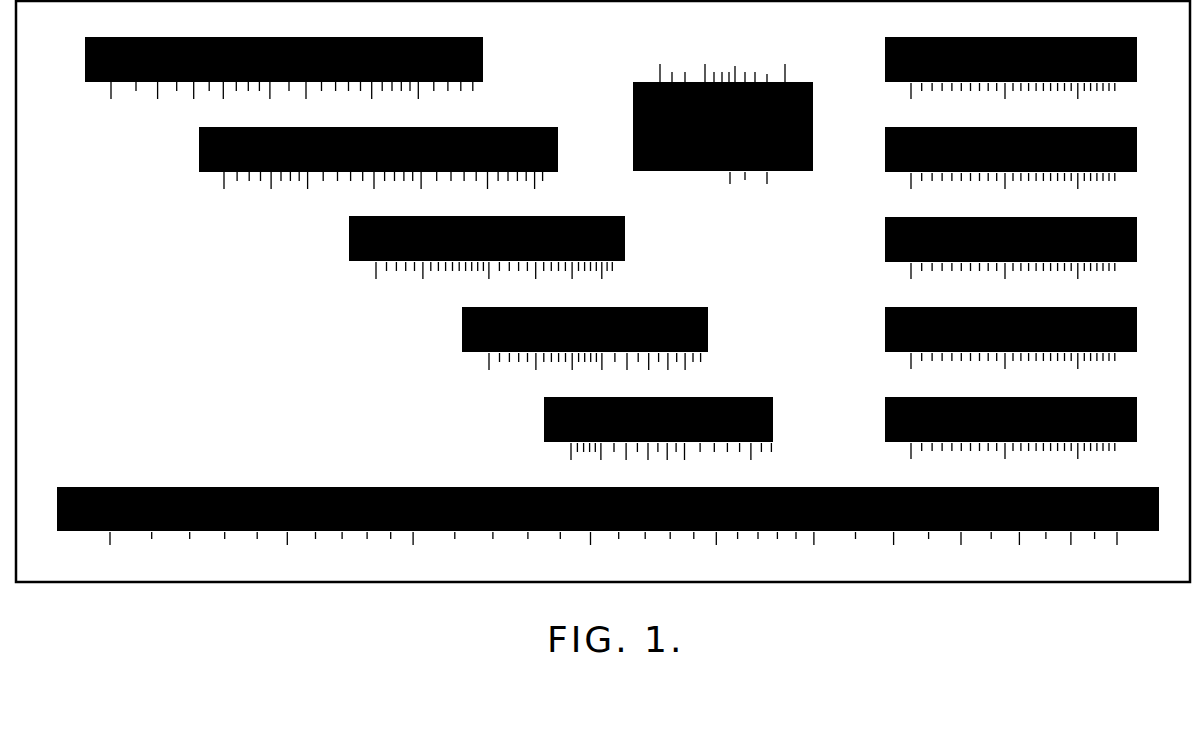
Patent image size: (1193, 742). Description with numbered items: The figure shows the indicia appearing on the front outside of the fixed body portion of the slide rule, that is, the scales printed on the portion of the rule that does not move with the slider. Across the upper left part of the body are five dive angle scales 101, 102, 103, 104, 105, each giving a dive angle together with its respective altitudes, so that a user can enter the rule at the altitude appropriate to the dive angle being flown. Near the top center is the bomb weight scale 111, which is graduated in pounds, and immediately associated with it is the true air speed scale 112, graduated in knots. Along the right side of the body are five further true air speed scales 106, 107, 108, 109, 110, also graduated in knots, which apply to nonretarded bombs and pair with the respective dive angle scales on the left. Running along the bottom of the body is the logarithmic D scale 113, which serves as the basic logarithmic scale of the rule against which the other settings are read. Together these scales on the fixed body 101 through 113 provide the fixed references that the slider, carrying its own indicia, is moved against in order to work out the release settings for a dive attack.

The dive angle and altitude scale 101 is at (70, 63).
The dive angle and altitude scale 102 is at (138, 158).
The dive angle and altitude scale 103 is at (285, 249).
The dive angle and altitude scale 104 is at (402, 338).
The dive angle and altitude scale 105 is at (480, 428).
The true air speed scale for nonretarded bombs 106 is at (883, 33).
The true air speed scale for nonretarded bombs 107 is at (880, 160).
The true air speed scale for nonretarded bombs 108 is at (830, 250).
The true air speed scale for nonretarded bombs 109 is at (830, 340).
The true air speed scale for nonretarded bombs 110 is at (830, 430).
The bomb weight scale 111 is at (668, 41).
The true air speed scale 112 is at (648, 203).
The logarithmic D scale 113 is at (85, 473).